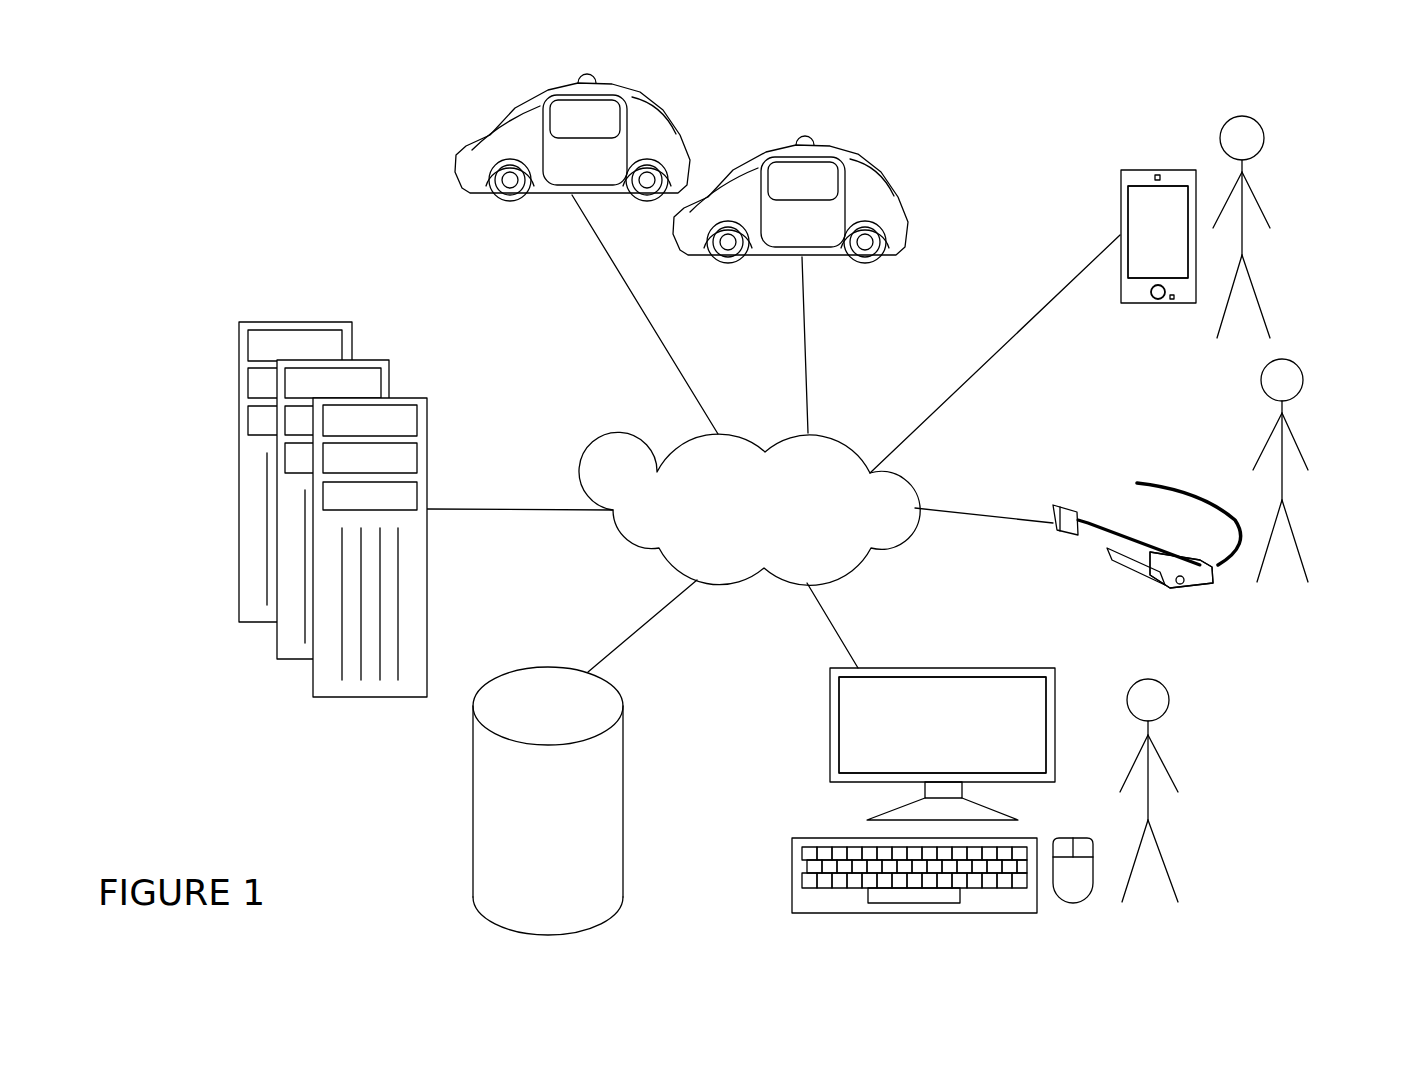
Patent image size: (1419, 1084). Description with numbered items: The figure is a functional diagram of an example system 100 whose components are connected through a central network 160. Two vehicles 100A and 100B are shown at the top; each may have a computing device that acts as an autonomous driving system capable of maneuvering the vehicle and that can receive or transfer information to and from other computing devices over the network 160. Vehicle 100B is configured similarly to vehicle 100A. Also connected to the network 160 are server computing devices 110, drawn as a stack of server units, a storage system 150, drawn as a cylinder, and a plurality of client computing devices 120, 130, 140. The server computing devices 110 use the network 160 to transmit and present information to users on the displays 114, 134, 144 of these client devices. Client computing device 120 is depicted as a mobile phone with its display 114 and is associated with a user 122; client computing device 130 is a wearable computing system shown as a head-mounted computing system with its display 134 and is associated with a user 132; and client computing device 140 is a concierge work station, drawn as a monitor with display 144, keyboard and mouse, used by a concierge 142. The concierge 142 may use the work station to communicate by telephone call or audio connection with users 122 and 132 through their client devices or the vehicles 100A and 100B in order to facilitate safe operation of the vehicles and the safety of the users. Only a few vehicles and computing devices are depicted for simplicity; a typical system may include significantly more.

The system 100 is at (203, 849).
The vehicle 100A is at (453, 166).
The vehicle 100B is at (907, 230).
The server computing devices 110 is at (430, 447).
The display 114 is at (1127, 183).
The client computing device 120 is at (1117, 293).
The user 122 is at (1243, 242).
The client computing device 130 is at (1178, 487).
The user 132 is at (1282, 488).
The display 134 is at (1211, 580).
The client computing device 140 is at (982, 668).
The concierge 142 is at (1148, 802).
The display 144 is at (1047, 697).
The storage system 150 is at (628, 813).
The network 160 is at (617, 537).